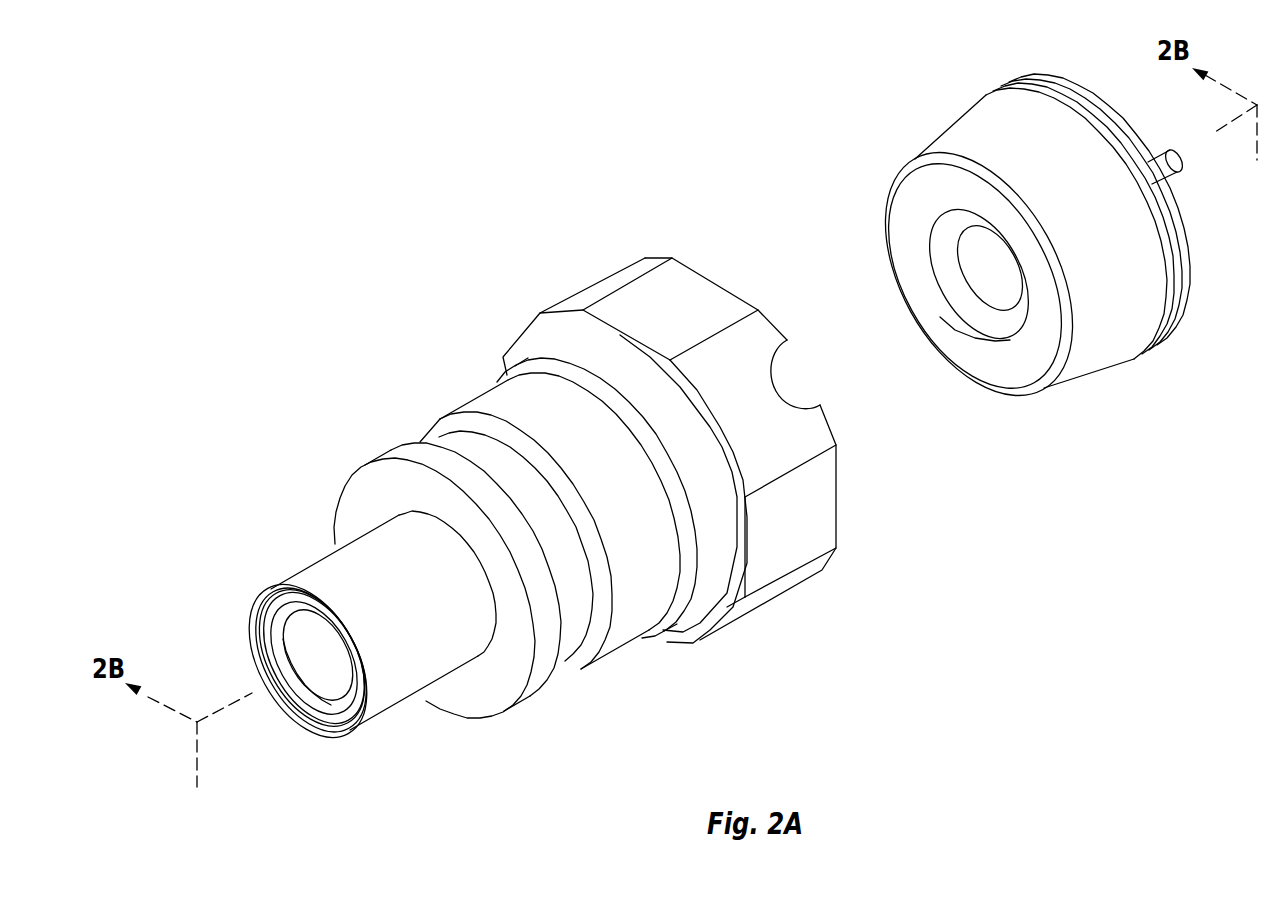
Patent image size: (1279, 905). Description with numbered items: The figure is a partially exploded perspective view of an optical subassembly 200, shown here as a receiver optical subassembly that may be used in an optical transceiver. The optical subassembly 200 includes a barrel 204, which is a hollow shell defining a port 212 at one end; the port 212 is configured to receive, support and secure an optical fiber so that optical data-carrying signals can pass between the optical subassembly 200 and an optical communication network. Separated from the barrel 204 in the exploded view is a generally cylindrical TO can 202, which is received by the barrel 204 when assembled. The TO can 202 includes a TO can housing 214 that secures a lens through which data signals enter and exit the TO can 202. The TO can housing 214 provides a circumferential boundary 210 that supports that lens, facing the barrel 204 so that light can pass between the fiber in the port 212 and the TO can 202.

The optical subassembly 200 is at (337, 121).
The TO can 202 is at (1018, 250).
The barrel 204 is at (489, 401).
The circumferential boundary 210 is at (975, 318).
The port 212 is at (318, 693).
The TO can housing 214 is at (968, 138).